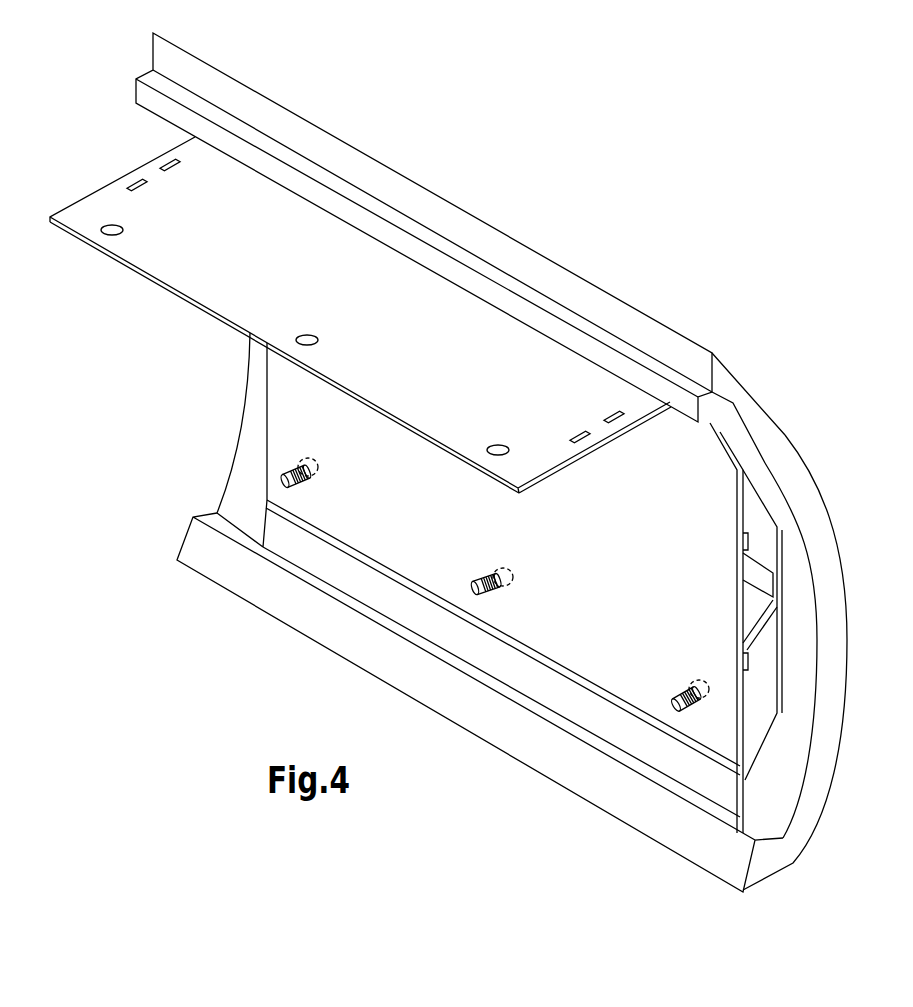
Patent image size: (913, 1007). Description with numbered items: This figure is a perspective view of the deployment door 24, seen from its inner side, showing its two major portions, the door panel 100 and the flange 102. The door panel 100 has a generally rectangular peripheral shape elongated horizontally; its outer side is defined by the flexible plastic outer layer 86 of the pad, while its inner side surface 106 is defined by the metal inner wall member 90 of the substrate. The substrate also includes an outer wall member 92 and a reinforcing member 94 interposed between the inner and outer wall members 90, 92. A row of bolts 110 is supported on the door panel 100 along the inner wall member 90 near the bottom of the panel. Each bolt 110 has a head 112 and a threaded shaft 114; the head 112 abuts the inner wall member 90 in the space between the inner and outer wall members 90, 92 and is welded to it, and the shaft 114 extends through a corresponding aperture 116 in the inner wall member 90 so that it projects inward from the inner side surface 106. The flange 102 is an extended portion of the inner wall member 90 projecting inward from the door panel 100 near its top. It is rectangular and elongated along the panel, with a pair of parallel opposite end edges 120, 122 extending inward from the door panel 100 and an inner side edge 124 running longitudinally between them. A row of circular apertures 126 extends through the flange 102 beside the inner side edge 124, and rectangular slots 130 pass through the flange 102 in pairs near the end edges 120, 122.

The deployment door 24 is at (468, 160).
The flange 102 is at (342, 247).
The end edge 120 is at (84, 198).
The end edge 122 is at (571, 464).
The inner side edge 124 is at (148, 276).
The circular apertures 126 is at (101, 233).
The rectangular slots 130 is at (148, 190).
The flexible outer layer 86 is at (767, 430).
The door panel 100 is at (806, 460).
The inner wall member 90 is at (743, 720).
The outer wall member 92 is at (783, 610).
The reinforcing member 94 is at (757, 637).
The inner side surface 106 is at (573, 658).
The bolts 110 is at (274, 477).
The head 112 is at (318, 464).
The threaded shaft 114 is at (297, 458).
The apertures 116 is at (314, 492).